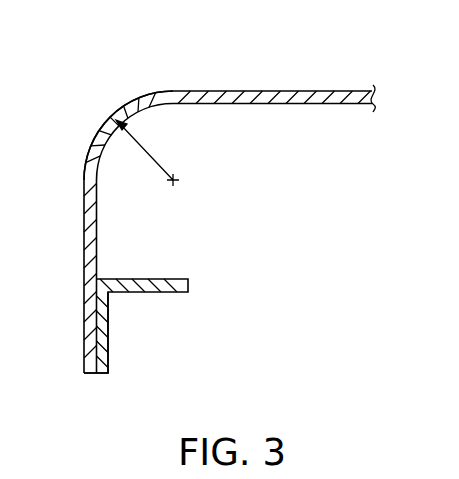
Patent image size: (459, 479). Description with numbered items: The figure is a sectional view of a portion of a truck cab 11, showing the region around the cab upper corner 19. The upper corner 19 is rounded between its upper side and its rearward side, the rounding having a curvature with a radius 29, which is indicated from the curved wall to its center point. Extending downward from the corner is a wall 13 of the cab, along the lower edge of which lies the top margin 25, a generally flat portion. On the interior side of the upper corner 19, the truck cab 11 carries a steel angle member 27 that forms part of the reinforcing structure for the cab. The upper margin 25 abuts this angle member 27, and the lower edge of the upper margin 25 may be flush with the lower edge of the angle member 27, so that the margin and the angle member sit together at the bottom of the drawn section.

The truck cab 11 is at (343, 78).
The bent wall section 13 is at (227, 91).
The cab upper corner 19 is at (100, 128).
The top margin 25 is at (85, 348).
The steel angle member 27 is at (160, 293).
The radius 29 is at (157, 157).